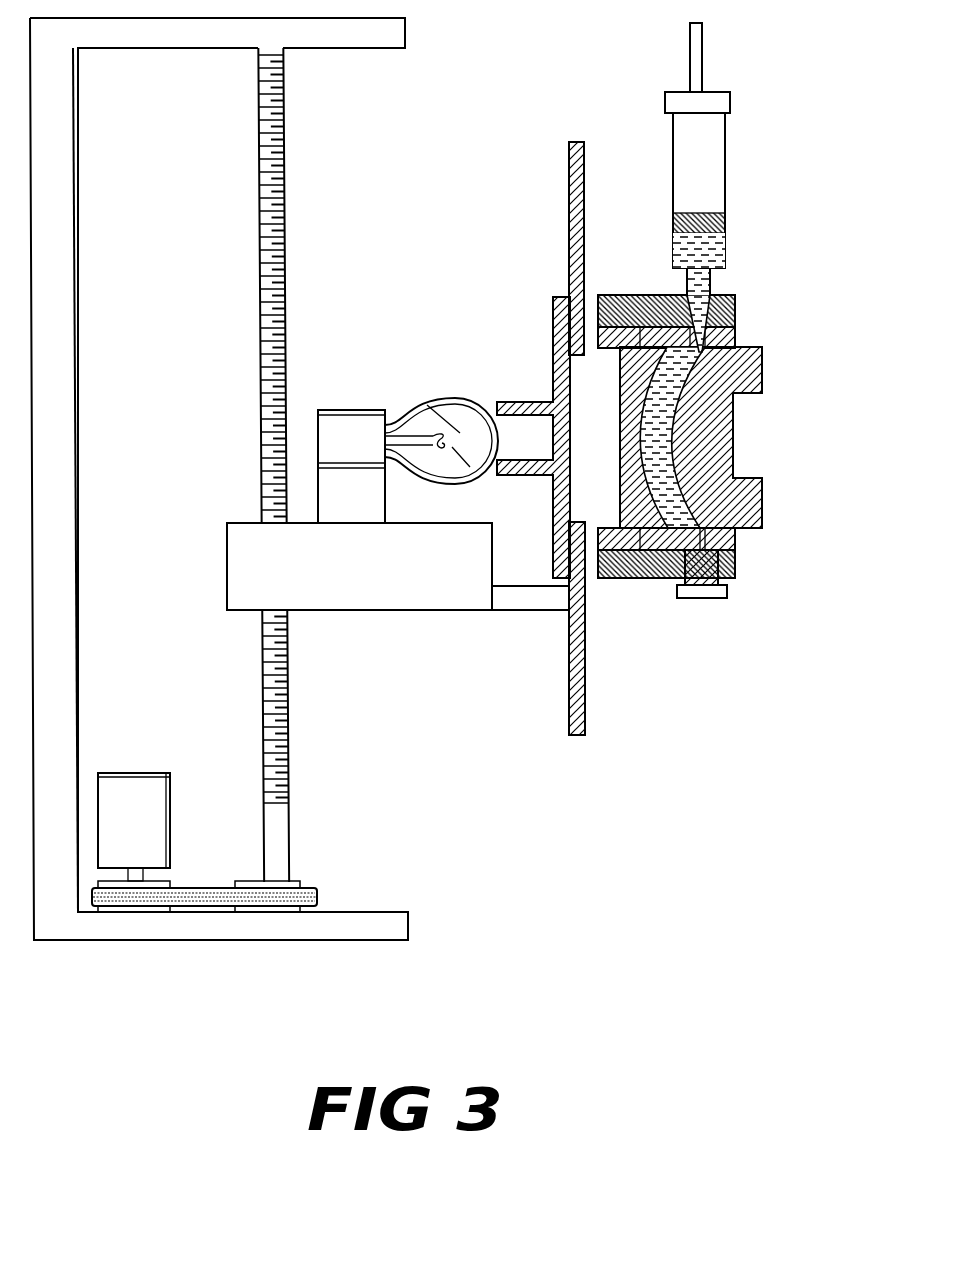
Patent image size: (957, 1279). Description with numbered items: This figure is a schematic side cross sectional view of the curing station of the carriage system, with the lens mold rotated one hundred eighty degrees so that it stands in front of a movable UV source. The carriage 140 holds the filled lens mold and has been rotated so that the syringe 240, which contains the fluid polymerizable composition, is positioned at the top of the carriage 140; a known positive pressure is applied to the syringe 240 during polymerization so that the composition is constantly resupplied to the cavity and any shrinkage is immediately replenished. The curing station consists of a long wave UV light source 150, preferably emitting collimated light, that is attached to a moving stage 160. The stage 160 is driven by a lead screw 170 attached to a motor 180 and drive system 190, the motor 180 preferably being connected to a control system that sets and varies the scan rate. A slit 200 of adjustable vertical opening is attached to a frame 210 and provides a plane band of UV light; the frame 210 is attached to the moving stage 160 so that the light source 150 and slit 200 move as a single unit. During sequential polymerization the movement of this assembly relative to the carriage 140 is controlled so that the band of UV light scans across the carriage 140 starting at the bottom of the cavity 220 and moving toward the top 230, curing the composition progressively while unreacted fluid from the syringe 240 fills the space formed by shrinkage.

The carriage 140 is at (744, 429).
The UV light source 150 is at (437, 400).
The moving stage 160 is at (245, 548).
The lead screw 170 is at (260, 162).
The motor 180 is at (137, 788).
The drive system 190 is at (215, 895).
The slit 200 is at (543, 402).
The frame 210 is at (572, 200).
The bottom of the cavity 220 is at (745, 545).
The top of the cavity 230 is at (749, 322).
The syringe 240 is at (710, 172).